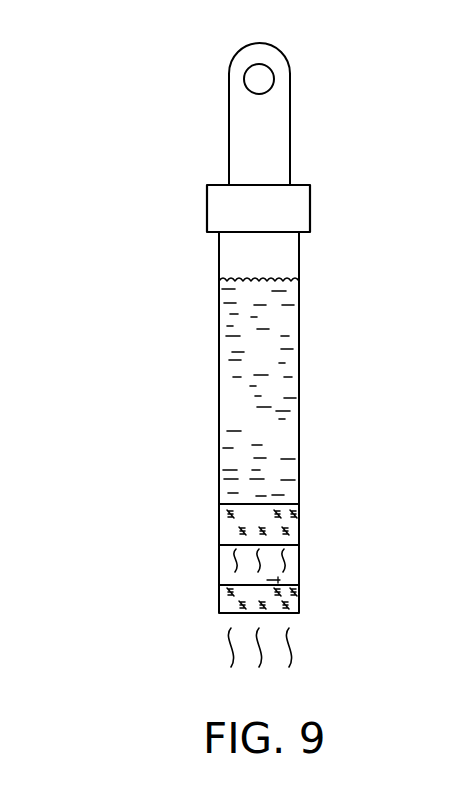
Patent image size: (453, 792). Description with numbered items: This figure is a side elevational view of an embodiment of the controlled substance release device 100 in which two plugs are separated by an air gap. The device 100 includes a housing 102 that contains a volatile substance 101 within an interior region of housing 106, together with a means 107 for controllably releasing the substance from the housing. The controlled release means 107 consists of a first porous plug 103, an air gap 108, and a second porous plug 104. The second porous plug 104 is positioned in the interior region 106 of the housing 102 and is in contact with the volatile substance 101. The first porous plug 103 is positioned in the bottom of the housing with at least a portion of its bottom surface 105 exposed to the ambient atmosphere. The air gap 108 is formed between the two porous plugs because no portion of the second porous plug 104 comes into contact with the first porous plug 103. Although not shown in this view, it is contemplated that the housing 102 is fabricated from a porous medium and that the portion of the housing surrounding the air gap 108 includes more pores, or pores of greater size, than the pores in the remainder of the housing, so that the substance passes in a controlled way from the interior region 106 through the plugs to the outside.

The controlled substance release device 100 is at (141, 76).
The volatile substance 101 is at (227, 381).
The housing 102 is at (299, 326).
The first porous plug 103 is at (285, 528).
The second porous plug 104 is at (293, 605).
The bottom surface 105 is at (226, 613).
The interior region of housing 106 is at (237, 261).
The means for controllably releasing the substance 107 is at (225, 555).
The air gap 108 is at (285, 565).